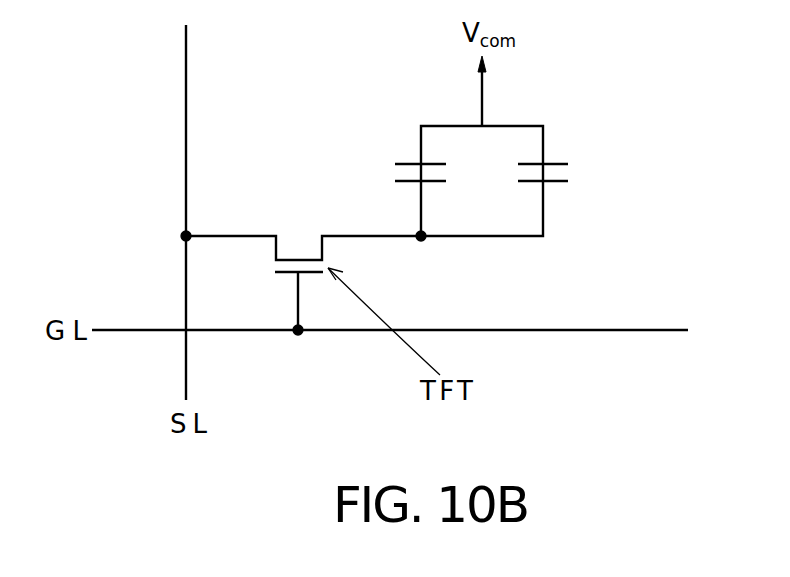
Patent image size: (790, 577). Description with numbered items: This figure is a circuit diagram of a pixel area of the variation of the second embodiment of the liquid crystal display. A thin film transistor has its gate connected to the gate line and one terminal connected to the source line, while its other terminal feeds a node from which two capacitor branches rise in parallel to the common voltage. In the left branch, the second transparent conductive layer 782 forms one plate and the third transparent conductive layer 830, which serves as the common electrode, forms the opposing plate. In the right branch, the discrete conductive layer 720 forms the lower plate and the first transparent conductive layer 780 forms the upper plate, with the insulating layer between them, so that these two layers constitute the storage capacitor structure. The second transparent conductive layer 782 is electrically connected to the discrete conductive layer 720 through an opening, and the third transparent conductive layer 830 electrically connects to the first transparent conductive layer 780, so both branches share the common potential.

The third transparent conductive layer 830 is at (412, 163).
The second transparent conductive layer 782 is at (412, 187).
The first transparent conductive layer 780 is at (557, 163).
The discrete conductive layer 720 is at (557, 187).